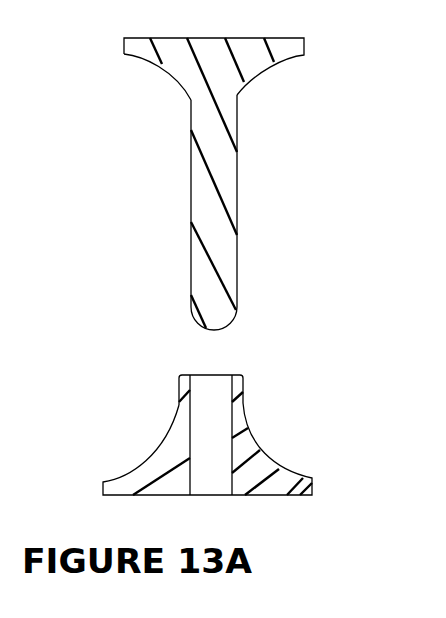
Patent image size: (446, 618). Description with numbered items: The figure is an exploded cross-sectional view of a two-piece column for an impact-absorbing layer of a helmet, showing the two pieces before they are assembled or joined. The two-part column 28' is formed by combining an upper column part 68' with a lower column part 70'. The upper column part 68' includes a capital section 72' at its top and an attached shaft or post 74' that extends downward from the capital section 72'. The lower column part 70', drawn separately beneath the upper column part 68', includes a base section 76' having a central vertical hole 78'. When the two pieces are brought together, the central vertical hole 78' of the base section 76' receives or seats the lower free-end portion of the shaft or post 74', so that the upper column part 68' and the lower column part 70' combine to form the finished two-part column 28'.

The two-part column 28' is at (227, 184).
The upper column part 68' is at (147, 83).
The capital section 72' is at (243, 67).
The shaft or post 74' is at (260, 184).
The central vertical hole 78' is at (164, 435).
The lower column part 70' is at (246, 406).
The base section 76' is at (228, 449).